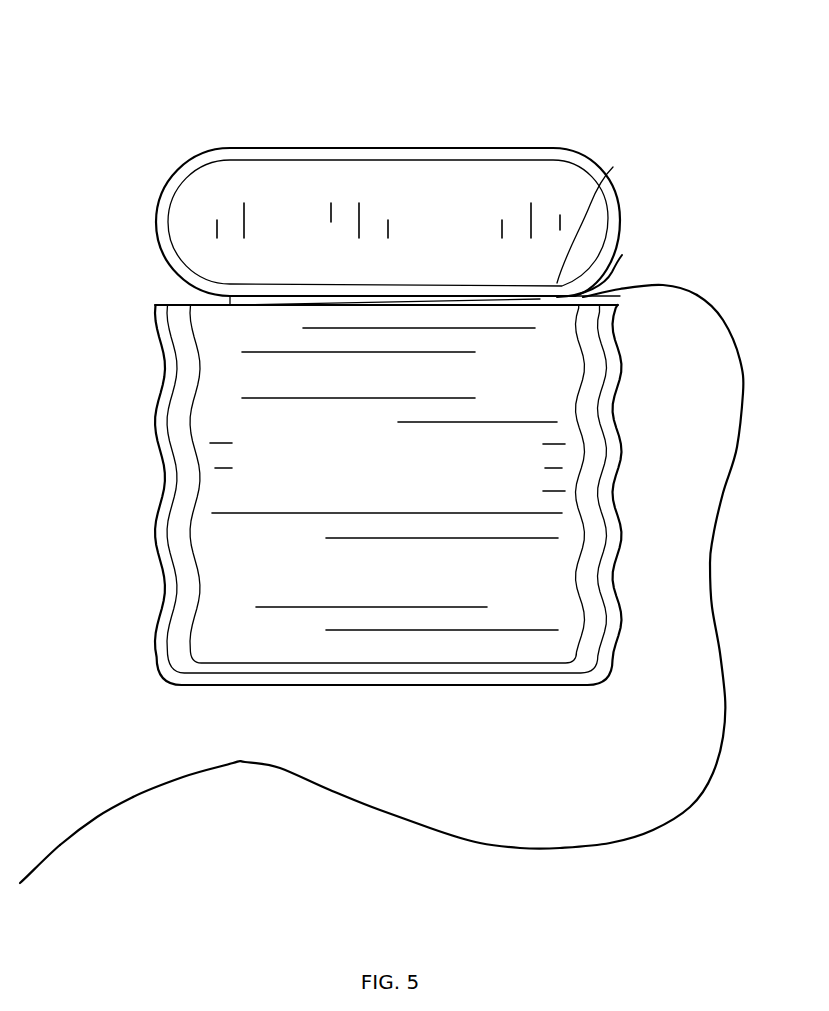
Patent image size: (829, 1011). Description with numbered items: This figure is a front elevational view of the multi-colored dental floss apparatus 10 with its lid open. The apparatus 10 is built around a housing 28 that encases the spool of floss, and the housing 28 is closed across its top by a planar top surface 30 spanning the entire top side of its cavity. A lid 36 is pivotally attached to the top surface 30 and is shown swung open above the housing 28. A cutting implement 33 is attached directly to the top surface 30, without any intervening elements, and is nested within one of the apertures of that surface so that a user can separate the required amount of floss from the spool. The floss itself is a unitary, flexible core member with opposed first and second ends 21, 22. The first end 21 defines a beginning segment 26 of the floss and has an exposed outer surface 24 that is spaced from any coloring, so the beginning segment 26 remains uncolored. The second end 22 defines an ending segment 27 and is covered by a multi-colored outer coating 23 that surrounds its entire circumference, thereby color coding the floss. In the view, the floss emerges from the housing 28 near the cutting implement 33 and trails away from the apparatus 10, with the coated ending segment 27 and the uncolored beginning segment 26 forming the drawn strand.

The apparatus 10 is at (133, 92).
The first end 21 is at (38, 866).
The second end 22 is at (622, 255).
The multi-colored outer coating 23 is at (699, 283).
The exposed outer surface 24 is at (92, 805).
The beginning segment 26 is at (125, 806).
The ending segment 27 is at (723, 487).
The housing 28 is at (150, 410).
The planar top surface 30 is at (160, 305).
The cutting implement 33 is at (613, 167).
The lid 36 is at (508, 158).